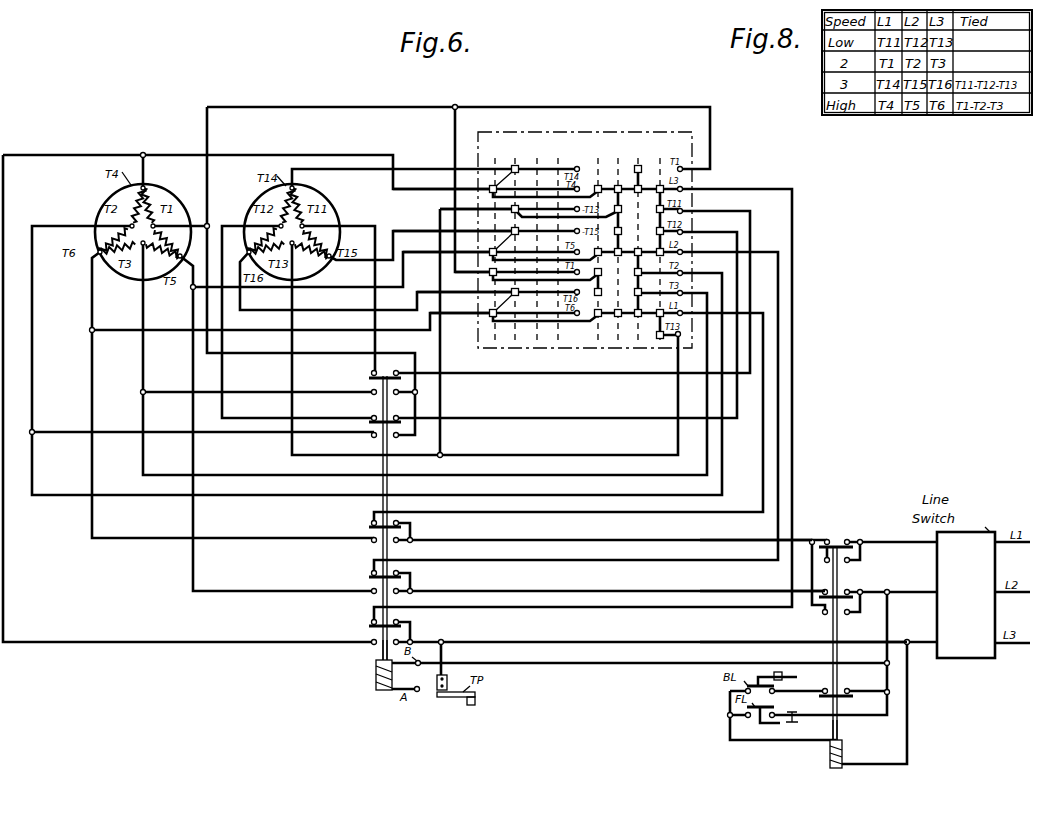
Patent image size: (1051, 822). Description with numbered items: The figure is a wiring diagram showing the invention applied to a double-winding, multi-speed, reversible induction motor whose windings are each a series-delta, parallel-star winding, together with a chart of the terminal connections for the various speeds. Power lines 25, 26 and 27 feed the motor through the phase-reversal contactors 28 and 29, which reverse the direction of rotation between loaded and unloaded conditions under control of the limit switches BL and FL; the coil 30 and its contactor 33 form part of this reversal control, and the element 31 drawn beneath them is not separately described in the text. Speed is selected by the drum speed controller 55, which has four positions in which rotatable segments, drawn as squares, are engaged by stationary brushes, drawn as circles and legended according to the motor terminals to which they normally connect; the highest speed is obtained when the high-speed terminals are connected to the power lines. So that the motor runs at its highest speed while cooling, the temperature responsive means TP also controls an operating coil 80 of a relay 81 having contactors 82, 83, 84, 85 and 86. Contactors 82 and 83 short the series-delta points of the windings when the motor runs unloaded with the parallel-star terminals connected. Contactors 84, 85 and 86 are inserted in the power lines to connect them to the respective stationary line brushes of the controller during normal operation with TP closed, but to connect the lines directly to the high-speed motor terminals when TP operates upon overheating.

The drum speed controller 55 is at (590, 134).
The contactor 82 is at (371, 378).
The contactor 83 is at (371, 417).
The contactor 84 is at (370, 625).
The contactor 85 is at (370, 576).
The contactor 86 is at (370, 526).
The relay 81 is at (380, 649).
The operating coil 80 is at (376, 682).
The phase-reversal contactor 28 is at (835, 545).
The phase-reversal contactor 29 is at (850, 594).
The contactor 33 is at (851, 697).
The coil 30 is at (840, 736).
The relay coil 31 is at (828, 752).
The power line 25 is at (720, 636).
The power line 26 is at (725, 583).
The power line 27 is at (733, 536).